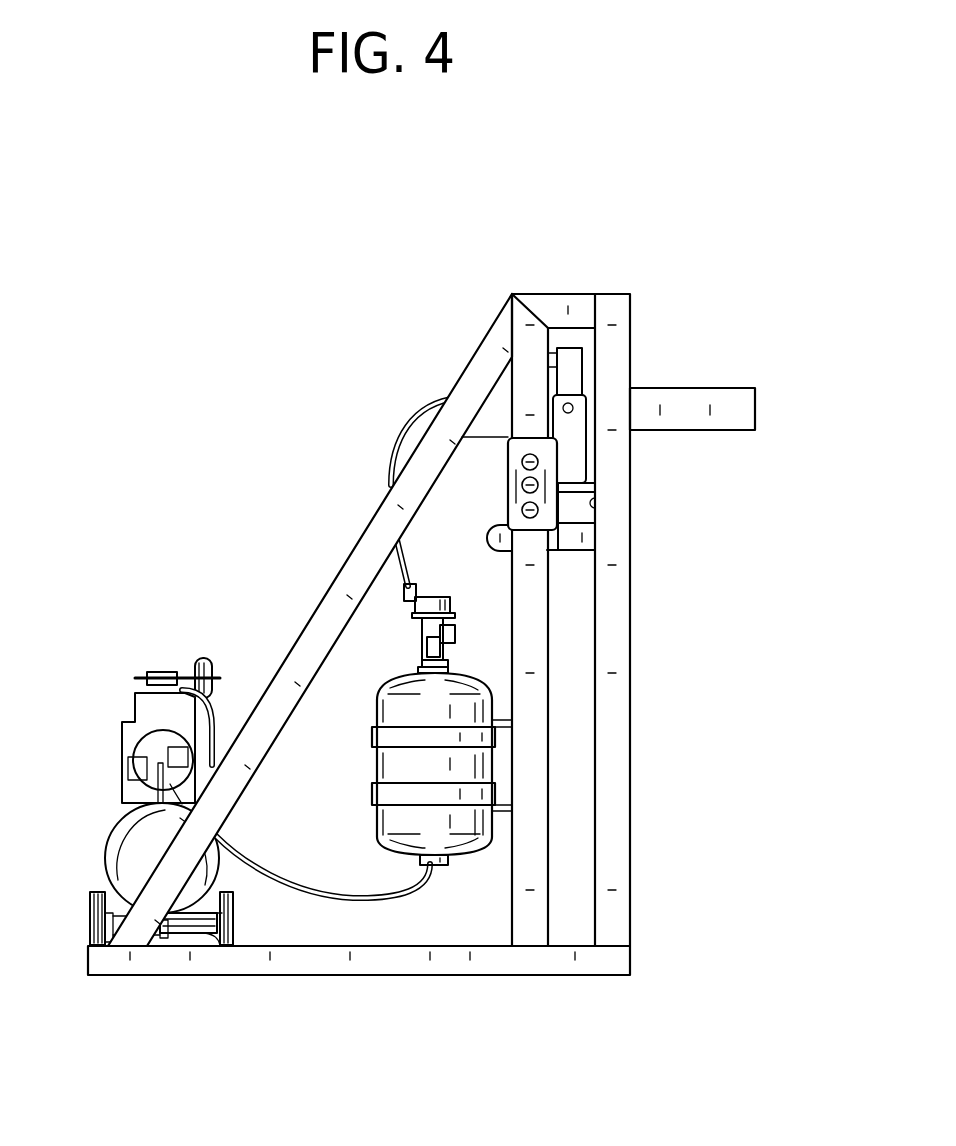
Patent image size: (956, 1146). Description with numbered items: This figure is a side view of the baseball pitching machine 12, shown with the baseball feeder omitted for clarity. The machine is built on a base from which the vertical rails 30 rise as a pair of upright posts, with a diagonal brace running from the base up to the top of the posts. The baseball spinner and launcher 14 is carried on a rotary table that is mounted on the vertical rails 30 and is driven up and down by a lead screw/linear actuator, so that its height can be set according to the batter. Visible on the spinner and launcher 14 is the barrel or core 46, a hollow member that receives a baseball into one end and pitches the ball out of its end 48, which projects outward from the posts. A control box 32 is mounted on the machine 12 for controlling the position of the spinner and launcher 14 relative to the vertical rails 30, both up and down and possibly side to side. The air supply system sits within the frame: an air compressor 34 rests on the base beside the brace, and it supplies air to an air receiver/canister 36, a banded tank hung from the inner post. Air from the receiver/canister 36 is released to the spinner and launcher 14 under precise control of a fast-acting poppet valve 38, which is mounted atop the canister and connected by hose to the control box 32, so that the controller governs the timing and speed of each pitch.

The baseball pitching machine 12 is at (594, 246).
The baseball spinner and launcher 14 is at (644, 371).
The vertical rails 30 is at (533, 657).
The control box 32 is at (502, 463).
The air compressor 34 is at (121, 720).
The air receiver/canister 36 is at (358, 754).
The fast-acting poppet valve 38 is at (406, 593).
The barrel or core 46 is at (723, 415).
The end 48 is at (757, 402).